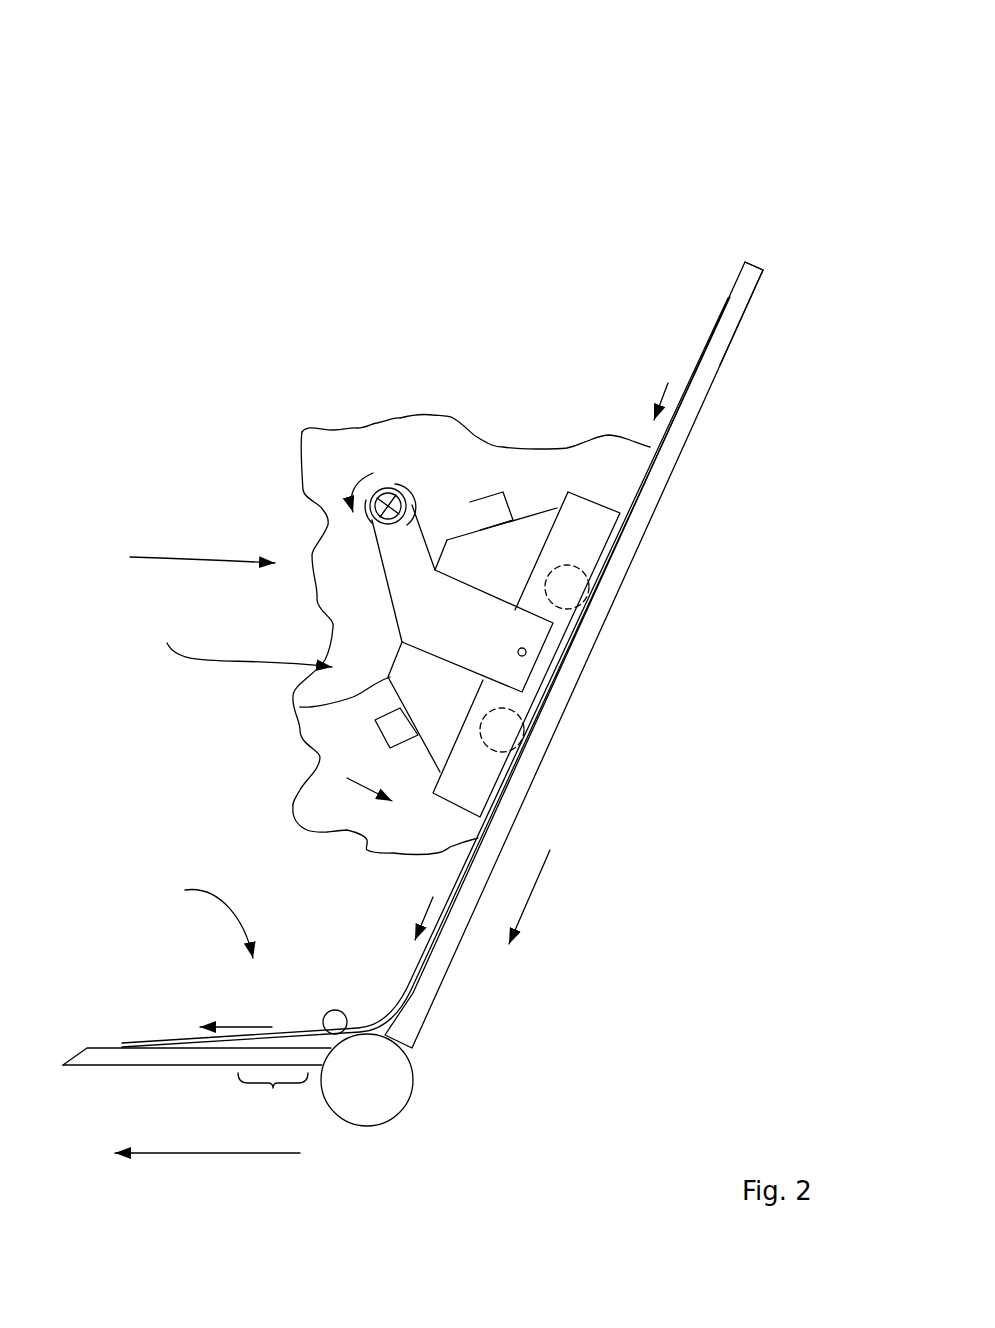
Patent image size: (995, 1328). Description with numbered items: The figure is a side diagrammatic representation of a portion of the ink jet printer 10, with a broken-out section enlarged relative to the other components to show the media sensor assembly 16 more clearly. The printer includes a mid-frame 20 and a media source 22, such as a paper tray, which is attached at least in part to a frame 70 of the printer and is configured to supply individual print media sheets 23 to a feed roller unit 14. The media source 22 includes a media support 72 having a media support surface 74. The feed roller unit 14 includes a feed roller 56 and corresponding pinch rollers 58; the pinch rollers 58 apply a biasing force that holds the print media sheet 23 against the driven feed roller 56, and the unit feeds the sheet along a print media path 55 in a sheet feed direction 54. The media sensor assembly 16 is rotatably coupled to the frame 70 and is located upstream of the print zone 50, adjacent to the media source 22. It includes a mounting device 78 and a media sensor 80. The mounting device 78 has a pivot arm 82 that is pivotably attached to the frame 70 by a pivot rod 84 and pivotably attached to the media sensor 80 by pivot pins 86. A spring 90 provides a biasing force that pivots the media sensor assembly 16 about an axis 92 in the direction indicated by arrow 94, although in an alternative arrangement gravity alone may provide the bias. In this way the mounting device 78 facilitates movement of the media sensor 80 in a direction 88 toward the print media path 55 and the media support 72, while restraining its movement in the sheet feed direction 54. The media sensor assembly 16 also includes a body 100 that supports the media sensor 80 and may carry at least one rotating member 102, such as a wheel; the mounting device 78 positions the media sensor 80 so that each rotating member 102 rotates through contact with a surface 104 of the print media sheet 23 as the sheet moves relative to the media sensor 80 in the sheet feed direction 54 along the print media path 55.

The ink jet printer 10 is at (132, 190).
The feed roller unit 14 is at (199, 920).
The media sensor assembly 16 is at (185, 560).
The mid-frame 20 is at (225, 1067).
The media source 22 is at (672, 192).
The print media sheet 23 is at (728, 288).
The print zone 50 is at (273, 1088).
The sheet feed direction 54 is at (530, 900).
The print media path 55 is at (647, 397).
The feed roller 56 is at (362, 1126).
The pinch rollers 58 is at (328, 1012).
The frame 70 is at (362, 428).
The media support 72 is at (764, 268).
The media support surface 74 is at (737, 263).
The mounting device 78 is at (449, 502).
The media sensor 80 is at (265, 658).
The pivot arm 82 is at (405, 473).
The pivot rod 84 is at (400, 540).
The pivot pins 86 is at (518, 652).
The direction 88 is at (347, 830).
The spring 90 is at (420, 488).
The axis 92 is at (363, 535).
The arrow 94 is at (350, 490).
The body 100 is at (373, 713).
The rotating member 102 is at (524, 712).
The surface 104 is at (642, 485).